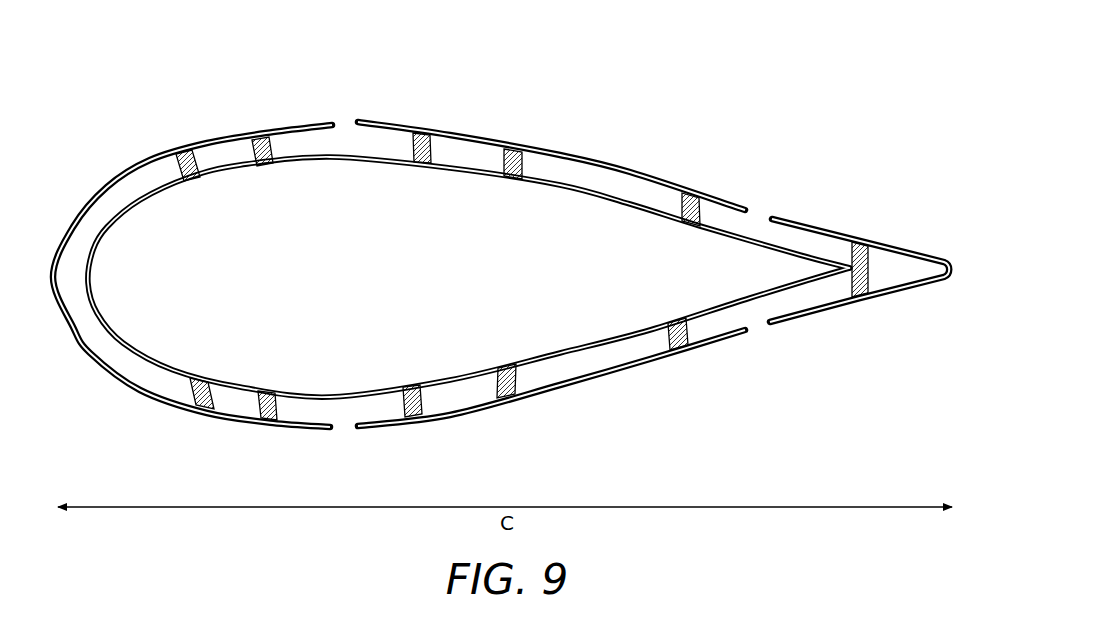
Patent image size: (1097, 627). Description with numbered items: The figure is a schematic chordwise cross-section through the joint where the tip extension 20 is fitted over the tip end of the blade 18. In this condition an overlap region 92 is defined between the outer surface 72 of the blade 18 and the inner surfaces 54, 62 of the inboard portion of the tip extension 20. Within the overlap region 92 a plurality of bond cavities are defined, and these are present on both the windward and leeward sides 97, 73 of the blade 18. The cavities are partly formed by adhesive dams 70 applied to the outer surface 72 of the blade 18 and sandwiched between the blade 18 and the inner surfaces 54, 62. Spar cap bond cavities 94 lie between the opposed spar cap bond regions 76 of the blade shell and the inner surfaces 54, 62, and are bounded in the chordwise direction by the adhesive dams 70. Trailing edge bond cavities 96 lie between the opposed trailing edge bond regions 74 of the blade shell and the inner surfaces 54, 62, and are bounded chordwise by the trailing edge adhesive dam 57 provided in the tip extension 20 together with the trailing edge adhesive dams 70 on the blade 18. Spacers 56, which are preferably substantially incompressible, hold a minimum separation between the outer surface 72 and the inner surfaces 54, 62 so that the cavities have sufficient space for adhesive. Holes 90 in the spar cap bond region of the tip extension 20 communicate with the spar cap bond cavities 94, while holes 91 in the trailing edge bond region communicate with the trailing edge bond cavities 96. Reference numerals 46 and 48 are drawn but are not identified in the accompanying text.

The blade 18 is at (138, 205).
The tip extension 20 is at (192, 225).
The pressure side skin 46 is at (618, 378).
The suction side skin 48 is at (578, 157).
The inner surface 54 is at (593, 368).
The spacer 56 is at (183, 152).
The trailing edge adhesive dam 57 is at (860, 242).
The inner surface 62 is at (605, 172).
The adhesive dam 70 is at (258, 138).
The outer surface 72 is at (105, 328).
The leeward side 73 is at (458, 157).
The trailing edge bond region 74 is at (782, 248).
The spar cap bond region 76 is at (370, 155).
The hole 90 is at (345, 123).
The hole 91 is at (757, 213).
The overlap region 92 is at (150, 382).
The spar cap bond cavity 94 is at (303, 147).
The trailing edge bond cavity 96 is at (817, 248).
The windward side 97 is at (462, 388).